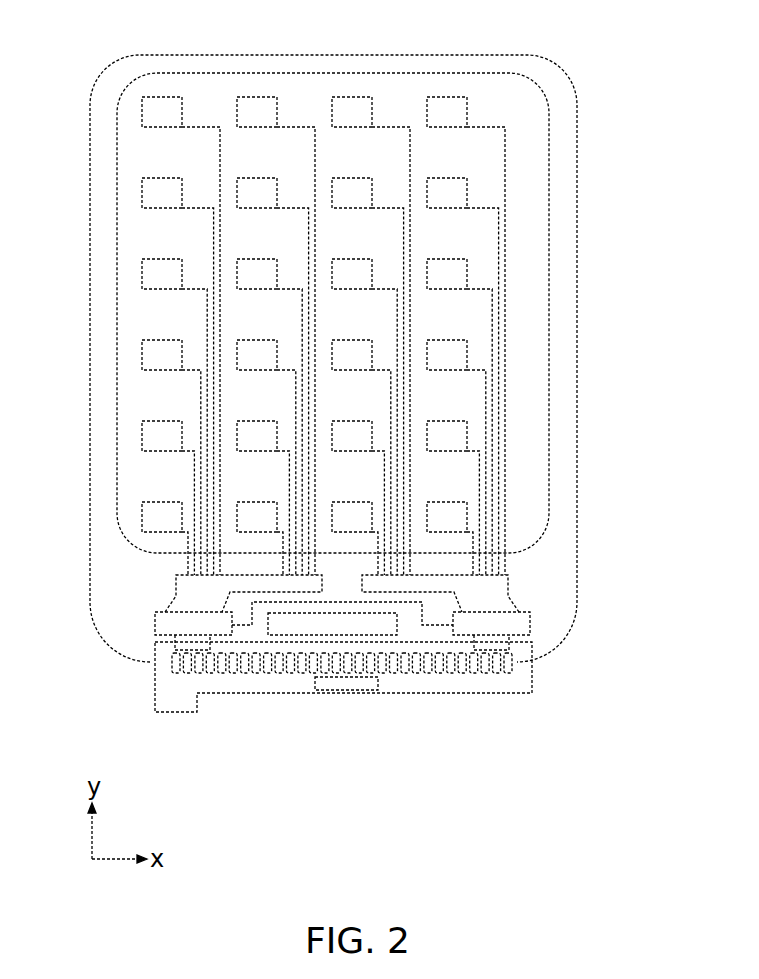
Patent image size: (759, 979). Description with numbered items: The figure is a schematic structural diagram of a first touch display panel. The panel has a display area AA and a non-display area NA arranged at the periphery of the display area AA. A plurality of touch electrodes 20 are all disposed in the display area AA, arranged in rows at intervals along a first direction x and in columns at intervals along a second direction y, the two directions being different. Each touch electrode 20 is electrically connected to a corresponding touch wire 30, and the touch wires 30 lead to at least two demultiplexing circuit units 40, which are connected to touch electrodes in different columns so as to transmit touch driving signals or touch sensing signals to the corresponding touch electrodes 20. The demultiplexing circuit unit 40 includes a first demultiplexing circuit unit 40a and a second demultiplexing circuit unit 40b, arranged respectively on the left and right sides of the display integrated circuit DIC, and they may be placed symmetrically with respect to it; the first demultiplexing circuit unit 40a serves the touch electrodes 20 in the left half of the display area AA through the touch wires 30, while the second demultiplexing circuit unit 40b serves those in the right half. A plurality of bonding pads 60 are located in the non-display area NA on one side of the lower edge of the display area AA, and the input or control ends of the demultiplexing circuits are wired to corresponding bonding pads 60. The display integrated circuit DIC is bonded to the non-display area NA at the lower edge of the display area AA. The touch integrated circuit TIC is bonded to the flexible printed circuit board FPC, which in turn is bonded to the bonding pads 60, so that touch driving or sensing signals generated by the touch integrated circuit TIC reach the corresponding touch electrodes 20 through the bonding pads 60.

The touch electrode 20 is at (257, 105).
The touch wire 30 is at (507, 282).
The demultiplexing circuit unit 40 is at (334, 747).
The first demultiplexing circuit unit 40a is at (155, 613).
The second demultiplexing circuit unit 40b is at (517, 624).
The bonding pad 60 is at (473, 657).
The display integrated circuit DIC is at (387, 627).
The touch integrated circuit TIC is at (357, 683).
The flexible printed circuit board FPC is at (522, 680).
The display area AA is at (537, 133).
The non-display area NA is at (563, 223).